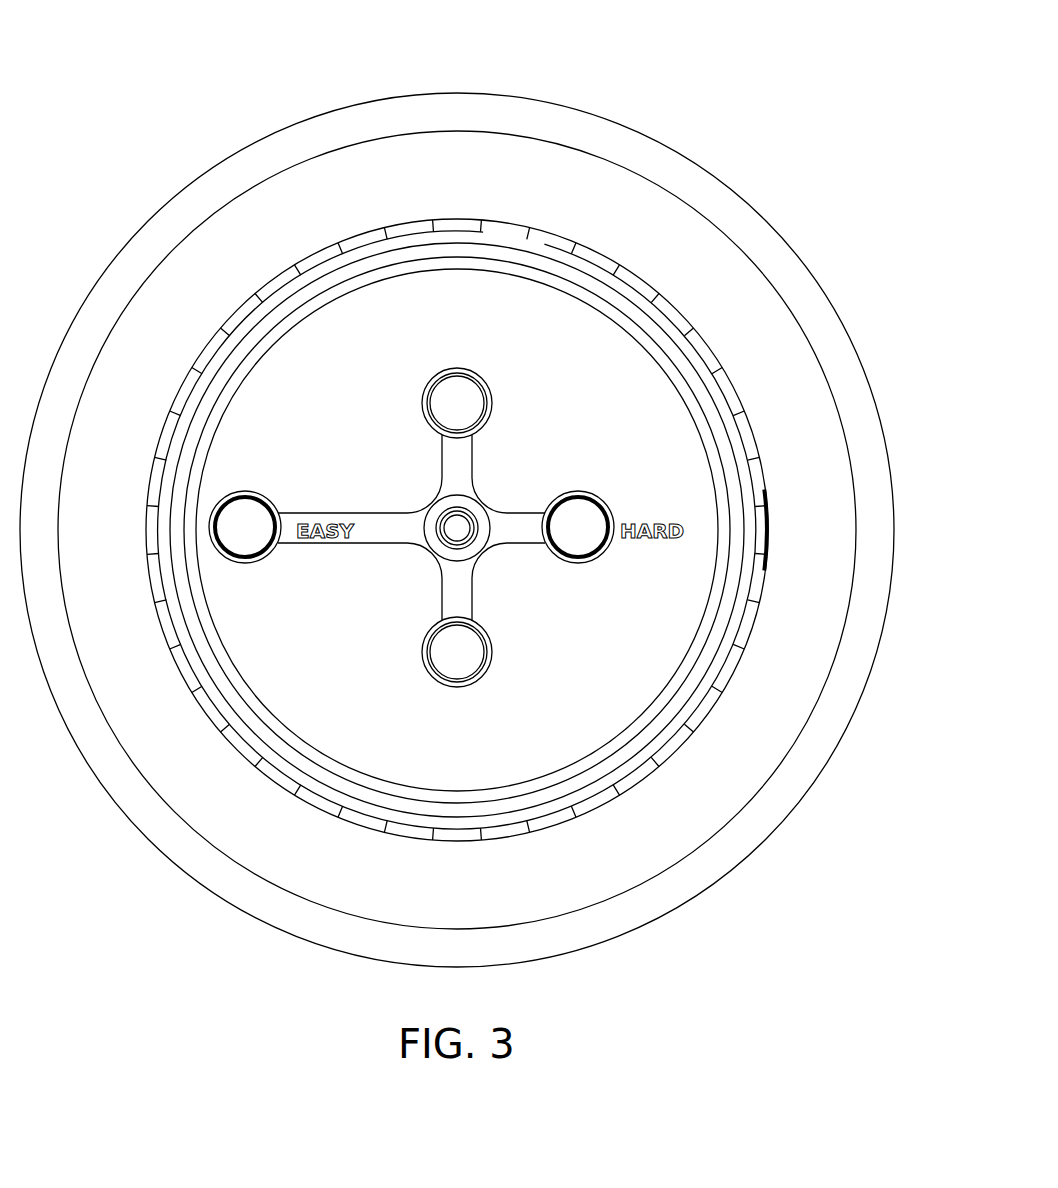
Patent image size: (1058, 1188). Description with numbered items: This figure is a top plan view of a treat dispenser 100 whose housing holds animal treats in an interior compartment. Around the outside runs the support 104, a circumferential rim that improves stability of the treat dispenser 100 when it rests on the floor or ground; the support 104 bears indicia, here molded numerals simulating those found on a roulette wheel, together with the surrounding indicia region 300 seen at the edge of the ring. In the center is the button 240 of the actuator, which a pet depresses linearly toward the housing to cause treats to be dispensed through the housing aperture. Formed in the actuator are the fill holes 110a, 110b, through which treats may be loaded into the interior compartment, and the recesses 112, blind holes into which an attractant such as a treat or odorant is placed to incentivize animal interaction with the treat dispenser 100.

The treat dispenser 100 is at (457, 488).
The support 104 is at (766, 230).
The number ring indicia 300 is at (811, 404).
The button 240 is at (457, 512).
The recesses 112 is at (461, 534).
The fill hole 110a is at (266, 493).
The fill hole 110b is at (601, 493).